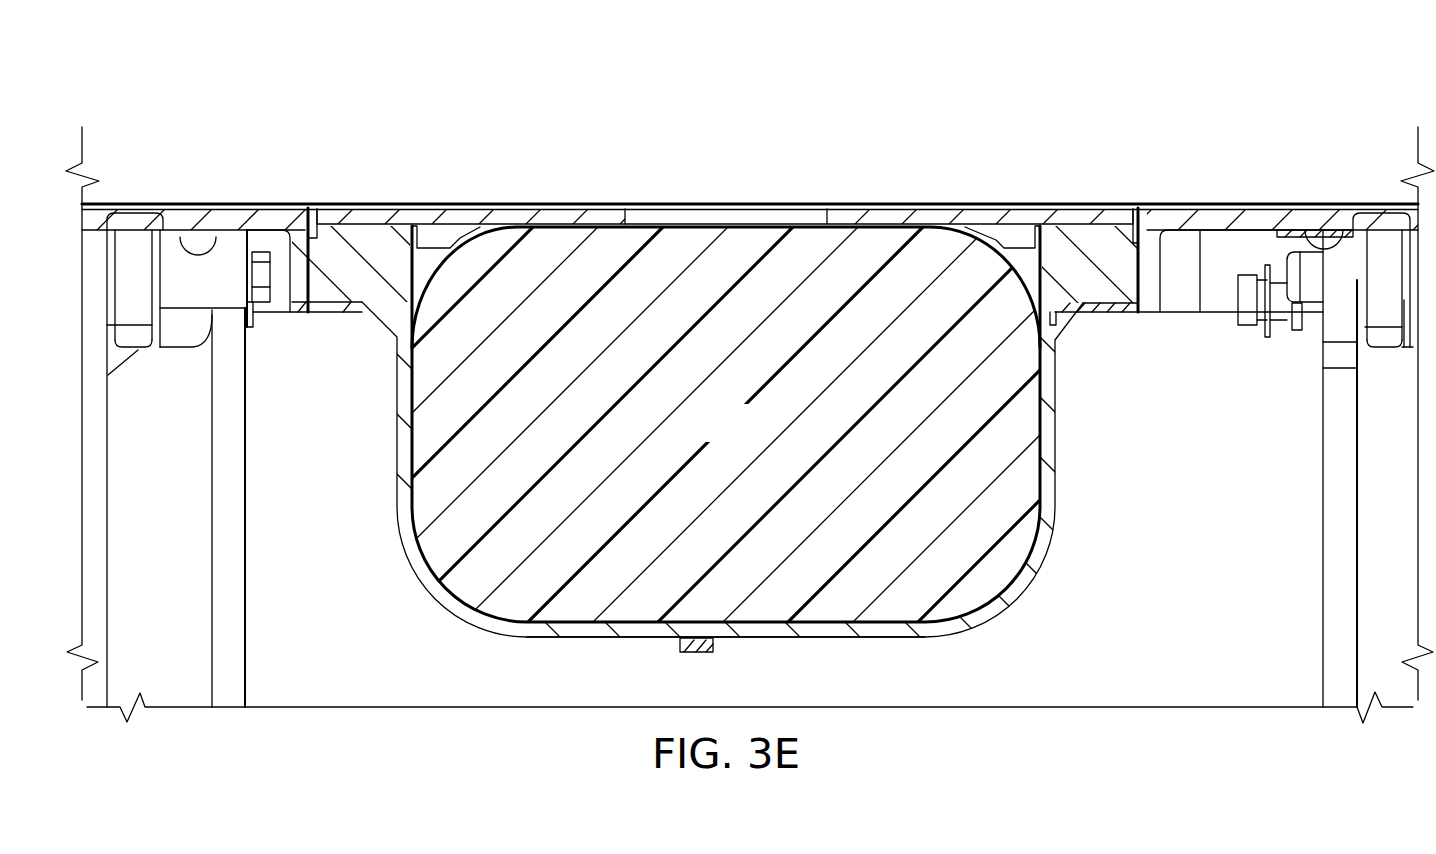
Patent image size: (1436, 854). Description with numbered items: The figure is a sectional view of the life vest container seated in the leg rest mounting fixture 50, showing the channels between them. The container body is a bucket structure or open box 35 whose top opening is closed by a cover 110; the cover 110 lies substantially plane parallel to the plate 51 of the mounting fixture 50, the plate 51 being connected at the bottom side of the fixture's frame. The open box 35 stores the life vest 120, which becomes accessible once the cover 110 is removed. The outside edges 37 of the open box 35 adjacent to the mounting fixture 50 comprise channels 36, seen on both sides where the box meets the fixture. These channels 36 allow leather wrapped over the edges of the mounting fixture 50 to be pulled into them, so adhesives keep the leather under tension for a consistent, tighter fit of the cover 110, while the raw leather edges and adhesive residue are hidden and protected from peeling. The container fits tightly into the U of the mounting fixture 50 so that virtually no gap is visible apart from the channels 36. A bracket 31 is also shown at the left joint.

The leg rest mounting fixture 50 is at (883, 96).
The bracket 31 is at (291, 255).
The bucket structure or open box 35 is at (825, 631).
The channels 36 is at (310, 206).
The edges 37 is at (332, 228).
The plate 51 is at (1247, 213).
The cover 110 is at (697, 206).
The life vest 120 is at (703, 437).